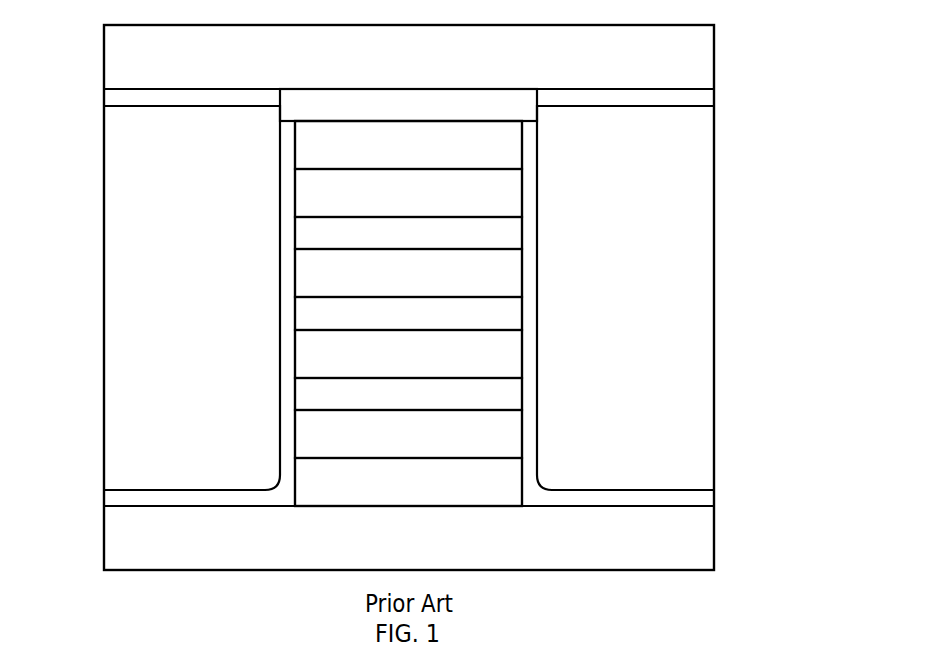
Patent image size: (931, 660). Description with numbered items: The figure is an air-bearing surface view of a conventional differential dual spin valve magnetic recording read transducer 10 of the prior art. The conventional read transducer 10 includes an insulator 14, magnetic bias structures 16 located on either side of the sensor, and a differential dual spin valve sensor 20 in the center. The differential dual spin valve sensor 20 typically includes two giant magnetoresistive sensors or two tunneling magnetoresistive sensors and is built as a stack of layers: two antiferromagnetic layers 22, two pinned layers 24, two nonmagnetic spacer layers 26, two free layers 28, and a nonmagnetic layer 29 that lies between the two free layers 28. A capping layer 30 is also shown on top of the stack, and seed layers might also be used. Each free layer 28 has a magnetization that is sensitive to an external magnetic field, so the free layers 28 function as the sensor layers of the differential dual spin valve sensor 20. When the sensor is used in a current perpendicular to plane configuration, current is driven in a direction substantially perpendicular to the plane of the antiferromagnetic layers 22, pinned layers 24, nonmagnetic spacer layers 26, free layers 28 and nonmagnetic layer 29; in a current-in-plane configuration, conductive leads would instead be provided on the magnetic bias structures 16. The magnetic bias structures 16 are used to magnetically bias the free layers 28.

The conventional read transducer 10 is at (70, 36).
The insulator 14 is at (117, 508).
The magnetic bias structures 16 is at (409, 298).
The differential dual spin valve sensor 20 is at (473, 523).
The antiferromagnetic layers 22 is at (408, 313).
The pinned layers 24 is at (408, 313).
The nonmagnetic spacer layers 26 is at (408, 313).
The free layers 28 is at (408, 313).
The nonmagnetic layer 29 is at (408, 313).
The capping layer 30 is at (408, 105).